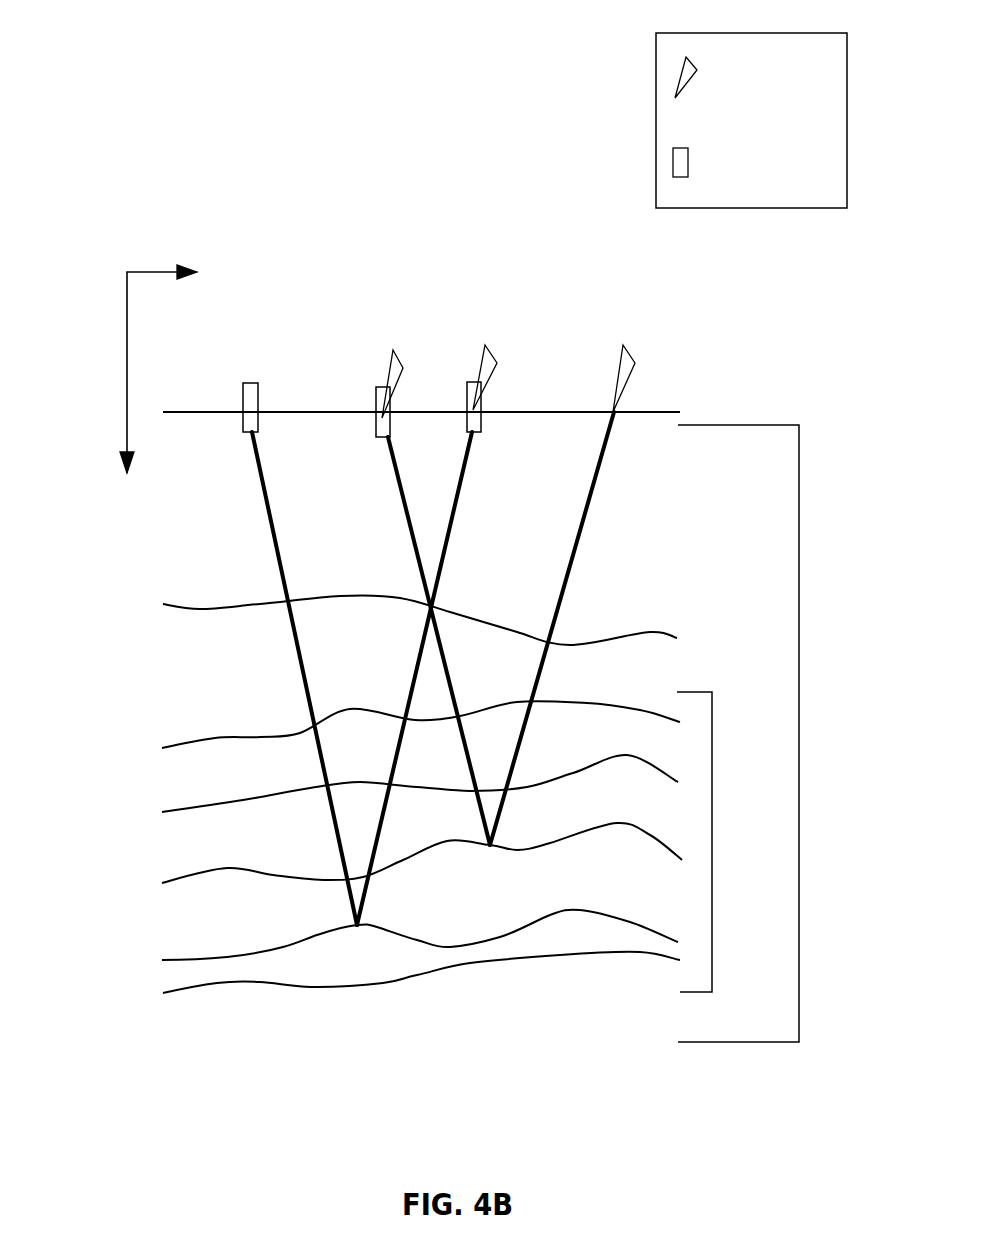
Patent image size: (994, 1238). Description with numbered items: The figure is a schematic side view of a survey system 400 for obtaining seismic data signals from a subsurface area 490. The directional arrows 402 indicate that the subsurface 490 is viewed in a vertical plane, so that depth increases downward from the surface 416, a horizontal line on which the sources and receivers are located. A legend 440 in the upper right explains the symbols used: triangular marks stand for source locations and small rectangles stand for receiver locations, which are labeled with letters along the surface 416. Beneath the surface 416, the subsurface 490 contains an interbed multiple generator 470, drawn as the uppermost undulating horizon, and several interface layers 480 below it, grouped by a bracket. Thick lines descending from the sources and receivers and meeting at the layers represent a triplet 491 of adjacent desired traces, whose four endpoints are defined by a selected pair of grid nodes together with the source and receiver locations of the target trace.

The survey system 400 is at (145, 97).
The directional arrows 402 is at (127, 325).
The surface 416 is at (653, 415).
The legend 440 is at (655, 120).
The interbed multiple generator 470 is at (650, 630).
The interface layers 480 is at (712, 800).
The subsurface area 490 is at (800, 652).
The triplet 491 is at (278, 558).